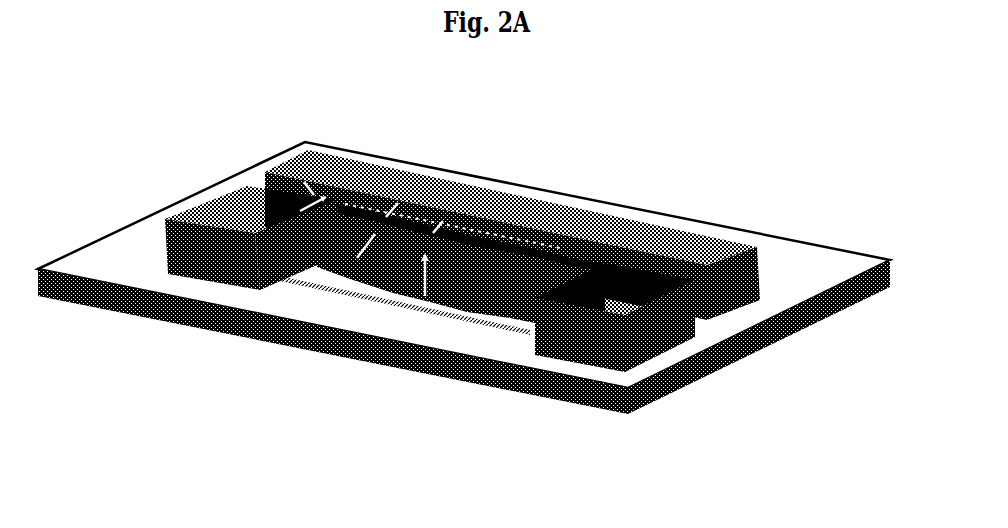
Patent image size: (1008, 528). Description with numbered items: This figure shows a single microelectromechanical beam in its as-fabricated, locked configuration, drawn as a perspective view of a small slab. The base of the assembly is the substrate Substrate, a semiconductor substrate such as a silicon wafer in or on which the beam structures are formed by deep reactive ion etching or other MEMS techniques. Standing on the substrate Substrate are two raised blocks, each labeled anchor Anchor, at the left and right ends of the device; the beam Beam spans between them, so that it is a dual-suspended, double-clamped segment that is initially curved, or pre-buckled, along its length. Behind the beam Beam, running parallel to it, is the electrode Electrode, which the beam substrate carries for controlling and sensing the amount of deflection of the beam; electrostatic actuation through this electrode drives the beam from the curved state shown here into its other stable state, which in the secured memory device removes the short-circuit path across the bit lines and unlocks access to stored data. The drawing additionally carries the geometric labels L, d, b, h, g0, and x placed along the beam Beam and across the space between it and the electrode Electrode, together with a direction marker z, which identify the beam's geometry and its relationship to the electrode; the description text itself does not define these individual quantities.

The substrate Substrate is at (464, 278).
The electrode Electrode is at (512, 235).
The beam Beam is at (458, 267).
The anchor Anchor is at (430, 279).
The beam length L is at (398, 304).
The initial gap between beam and electrode g0 is at (292, 188).
The beam displacement x is at (452, 219).
The initial rise of curved beam h is at (448, 221).
The lateral axis z is at (310, 214).
The beam thickness d is at (359, 245).
The beam height b is at (415, 274).